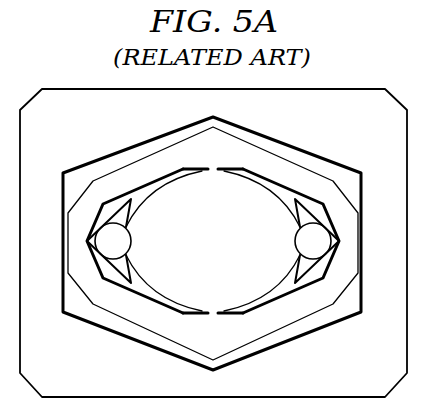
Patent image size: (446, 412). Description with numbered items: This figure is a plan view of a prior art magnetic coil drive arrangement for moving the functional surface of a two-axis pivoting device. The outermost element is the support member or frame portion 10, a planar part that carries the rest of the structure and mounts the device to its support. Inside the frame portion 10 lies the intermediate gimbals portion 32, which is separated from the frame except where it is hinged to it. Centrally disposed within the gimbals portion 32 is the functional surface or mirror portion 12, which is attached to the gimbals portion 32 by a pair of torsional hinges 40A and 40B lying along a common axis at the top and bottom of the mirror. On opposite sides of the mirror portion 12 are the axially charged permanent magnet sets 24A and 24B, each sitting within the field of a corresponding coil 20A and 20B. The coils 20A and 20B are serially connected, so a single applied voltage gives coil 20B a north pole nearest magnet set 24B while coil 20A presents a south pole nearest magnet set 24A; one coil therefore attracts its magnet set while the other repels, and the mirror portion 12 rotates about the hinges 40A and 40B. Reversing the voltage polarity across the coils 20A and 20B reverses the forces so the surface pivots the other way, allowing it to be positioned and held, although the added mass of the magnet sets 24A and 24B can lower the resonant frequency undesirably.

The support member or frame portion 10 is at (73, 95).
The mirror portion 12 is at (261, 226).
The coil 20A is at (118, 268).
The coil 20B is at (308, 268).
The permanent magnet set 24A is at (131, 242).
The permanent magnet set 24B is at (295, 241).
The intermediate gimbals portion 32 is at (295, 168).
The torsional hinge 40A is at (212, 314).
The torsional hinge 40B is at (212, 168).